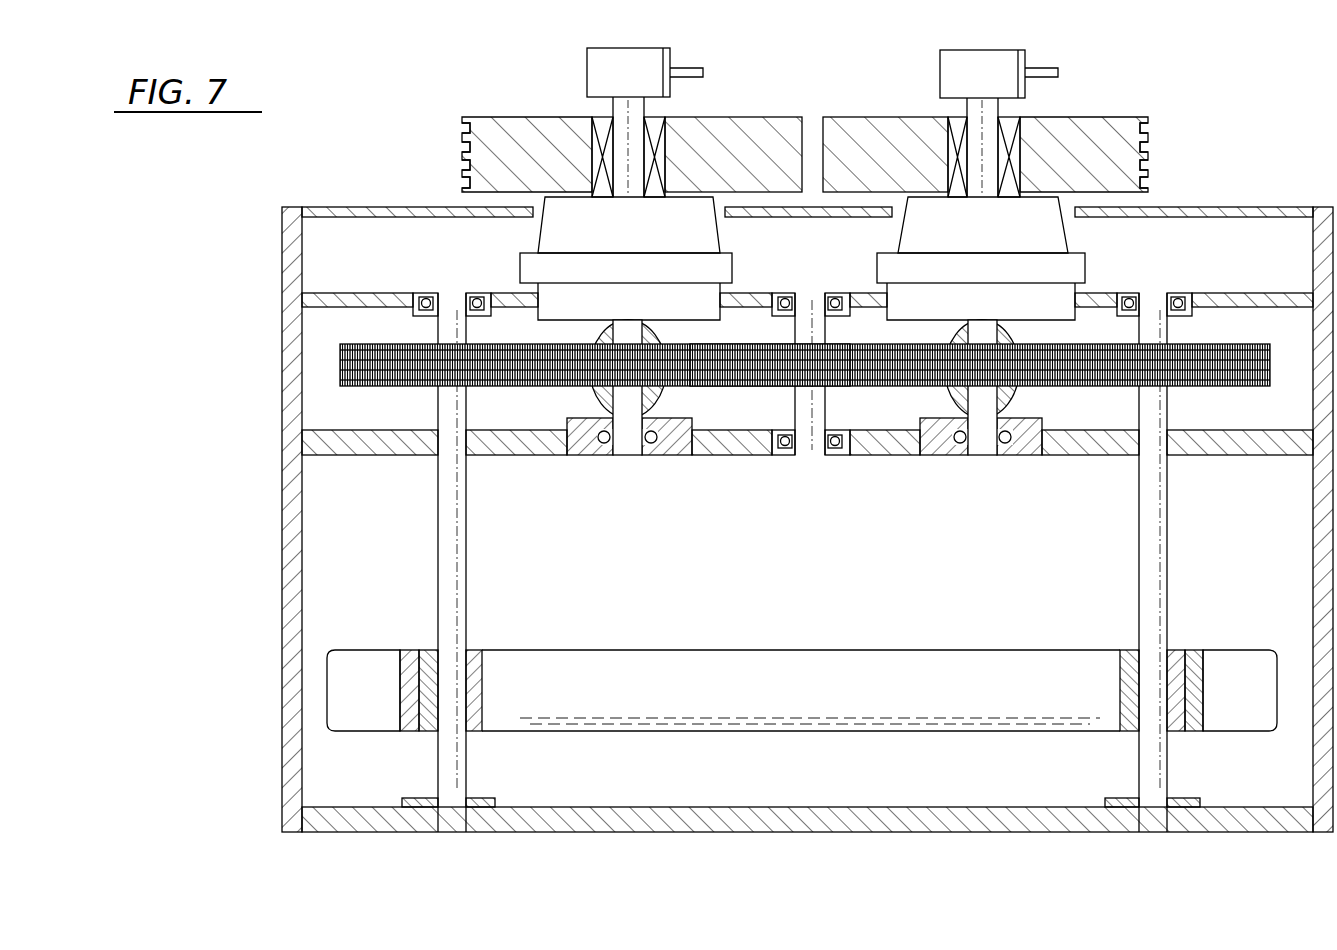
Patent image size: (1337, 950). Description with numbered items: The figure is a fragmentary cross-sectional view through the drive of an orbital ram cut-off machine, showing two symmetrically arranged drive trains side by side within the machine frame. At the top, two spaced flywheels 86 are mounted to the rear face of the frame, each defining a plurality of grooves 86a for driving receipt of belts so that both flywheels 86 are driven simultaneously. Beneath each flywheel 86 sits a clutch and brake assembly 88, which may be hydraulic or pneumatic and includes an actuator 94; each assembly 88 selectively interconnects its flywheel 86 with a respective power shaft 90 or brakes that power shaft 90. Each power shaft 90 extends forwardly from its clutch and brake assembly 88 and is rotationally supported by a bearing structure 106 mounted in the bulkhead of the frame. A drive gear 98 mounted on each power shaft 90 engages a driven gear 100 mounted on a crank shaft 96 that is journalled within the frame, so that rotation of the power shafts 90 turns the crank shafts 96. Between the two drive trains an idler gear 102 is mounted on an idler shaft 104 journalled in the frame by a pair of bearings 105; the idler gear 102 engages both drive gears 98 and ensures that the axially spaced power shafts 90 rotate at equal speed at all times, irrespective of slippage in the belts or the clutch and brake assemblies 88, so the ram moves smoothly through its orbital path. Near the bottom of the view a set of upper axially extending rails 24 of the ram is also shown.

The upper axially extending rails 24 is at (725, 680).
The flywheel 86 is at (724, 128).
The grooves 86a is at (462, 142).
The clutch and brake assembly 88 is at (710, 240).
The power shaft 90 is at (640, 412).
The actuator 94 is at (598, 62).
The crank shaft 96 is at (458, 604).
The drive gear 98 is at (590, 375).
The driven gear 100 is at (386, 372).
The idler gear 102 is at (786, 365).
The idler shaft 104 is at (815, 416).
The bearings 105 is at (833, 300).
The bearing structure 106 is at (652, 450).